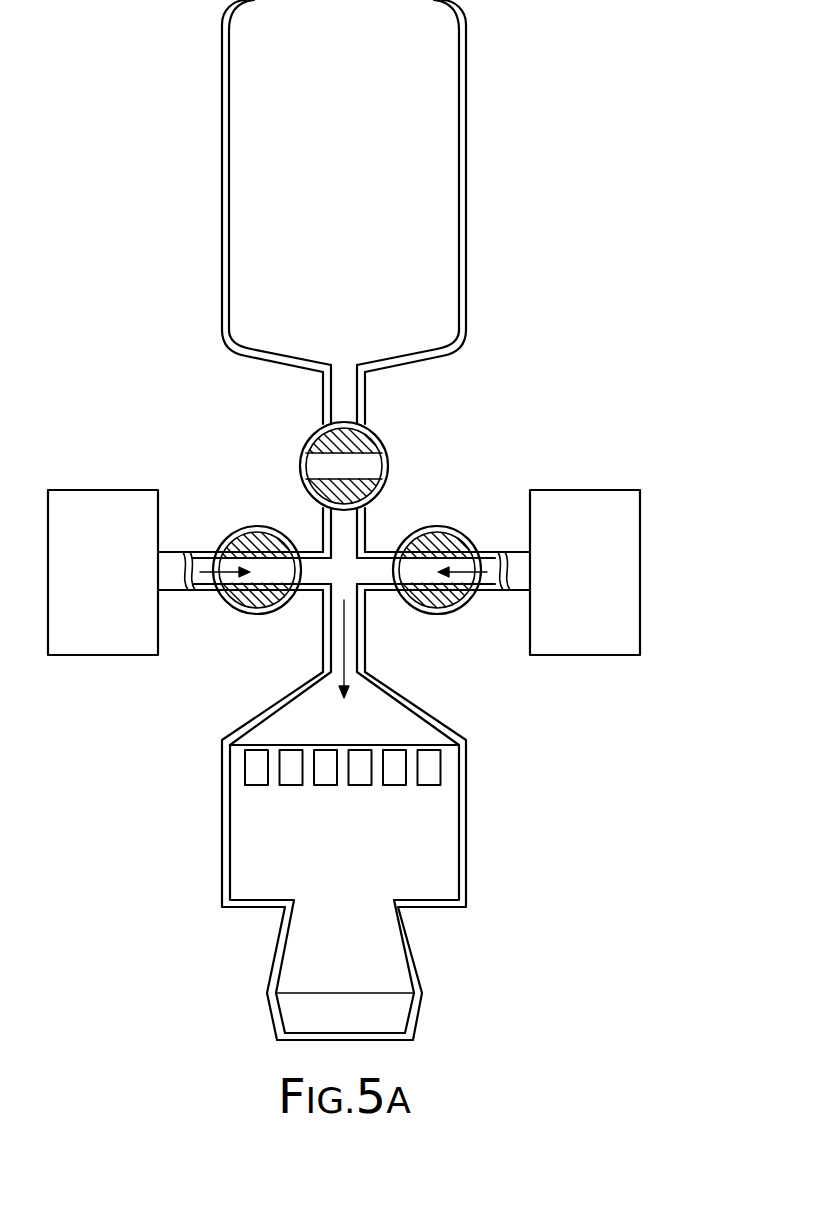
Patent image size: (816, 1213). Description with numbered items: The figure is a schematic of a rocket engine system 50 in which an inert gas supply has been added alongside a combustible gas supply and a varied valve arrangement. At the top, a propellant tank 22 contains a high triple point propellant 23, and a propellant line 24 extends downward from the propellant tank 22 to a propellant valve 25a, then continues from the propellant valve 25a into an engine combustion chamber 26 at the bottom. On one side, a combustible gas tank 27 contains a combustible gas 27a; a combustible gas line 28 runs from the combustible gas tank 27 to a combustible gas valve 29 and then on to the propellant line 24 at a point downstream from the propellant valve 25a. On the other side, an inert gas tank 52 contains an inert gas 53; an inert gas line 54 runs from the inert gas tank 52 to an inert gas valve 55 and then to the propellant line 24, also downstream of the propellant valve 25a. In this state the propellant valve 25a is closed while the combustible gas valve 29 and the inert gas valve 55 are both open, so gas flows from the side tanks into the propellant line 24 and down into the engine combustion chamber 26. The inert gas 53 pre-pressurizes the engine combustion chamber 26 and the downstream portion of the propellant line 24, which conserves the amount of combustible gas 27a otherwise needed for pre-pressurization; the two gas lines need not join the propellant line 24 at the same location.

The propellant tank 22 is at (467, 203).
The high triple point propellant 23 is at (395, 152).
The propellant line 24 is at (366, 401).
The propellant valve 25a is at (387, 443).
The engine combustion chamber 26 is at (222, 886).
The combustible gas tank 27 is at (102, 490).
The combustible gas 27a is at (98, 632).
The combustible gas line 28 is at (172, 552).
The combustible gas valve 29 is at (226, 601).
The rocket engine system 50 is at (158, 372).
The inert gas tank 52 is at (642, 553).
The inert gas 53 is at (562, 510).
The inert gas line 54 is at (520, 552).
The inert gas valve 55 is at (468, 601).